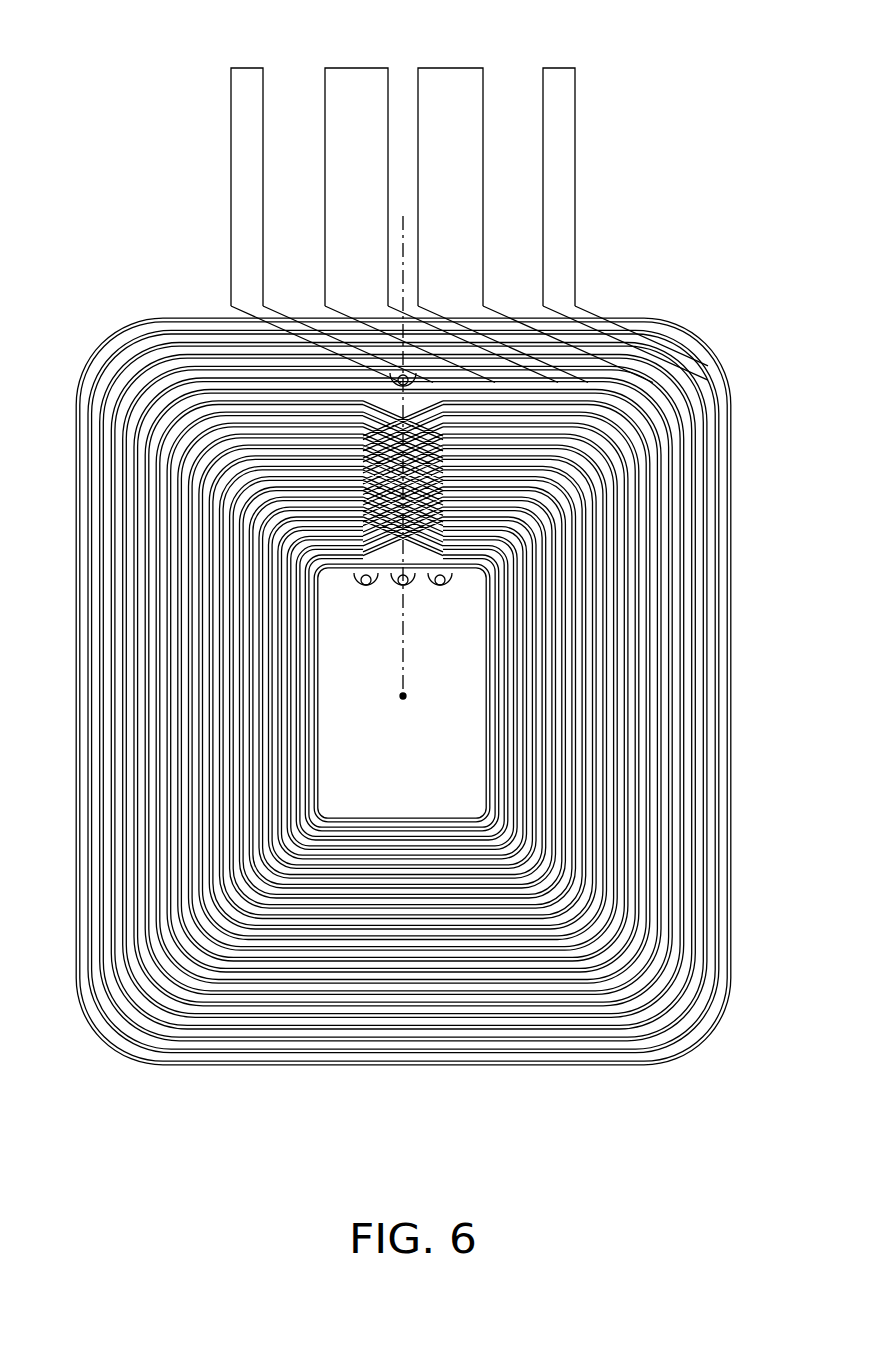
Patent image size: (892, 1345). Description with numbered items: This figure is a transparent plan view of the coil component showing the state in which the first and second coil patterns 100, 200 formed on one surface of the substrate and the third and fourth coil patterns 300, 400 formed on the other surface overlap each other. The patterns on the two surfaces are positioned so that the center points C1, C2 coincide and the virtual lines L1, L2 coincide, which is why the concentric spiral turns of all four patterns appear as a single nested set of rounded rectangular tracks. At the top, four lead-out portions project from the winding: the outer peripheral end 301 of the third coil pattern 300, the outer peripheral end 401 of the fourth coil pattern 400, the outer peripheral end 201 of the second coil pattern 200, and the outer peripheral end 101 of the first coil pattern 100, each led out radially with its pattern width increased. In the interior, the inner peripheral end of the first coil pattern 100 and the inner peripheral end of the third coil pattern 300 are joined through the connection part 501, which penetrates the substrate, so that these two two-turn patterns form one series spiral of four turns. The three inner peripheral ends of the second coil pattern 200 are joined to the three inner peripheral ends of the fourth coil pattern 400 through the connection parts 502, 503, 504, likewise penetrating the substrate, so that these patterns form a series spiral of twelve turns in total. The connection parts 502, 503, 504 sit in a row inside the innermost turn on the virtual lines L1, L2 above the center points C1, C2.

The first coil pattern 100 is at (660, 312).
The second coil pattern 200 is at (688, 355).
The third coil pattern 300 is at (424, 659).
The fourth coil pattern 400 is at (449, 674).
The outer peripheral end of the first coil pattern 101 is at (551, 68).
The outer peripheral end of the second coil pattern 201 is at (441, 68).
The outer peripheral end of the third coil pattern 301 is at (239, 68).
The outer peripheral end of the fourth coil pattern 401 is at (347, 68).
The connection part 501 is at (388, 364).
The connection part 502 is at (432, 583).
The connection part 503 is at (396, 580).
The connection part 504 is at (358, 583).
The virtual line L1 is at (395, 655).
The virtual line L2 is at (367, 462).
The center point C1 is at (395, 691).
The center point C2 is at (401, 729).